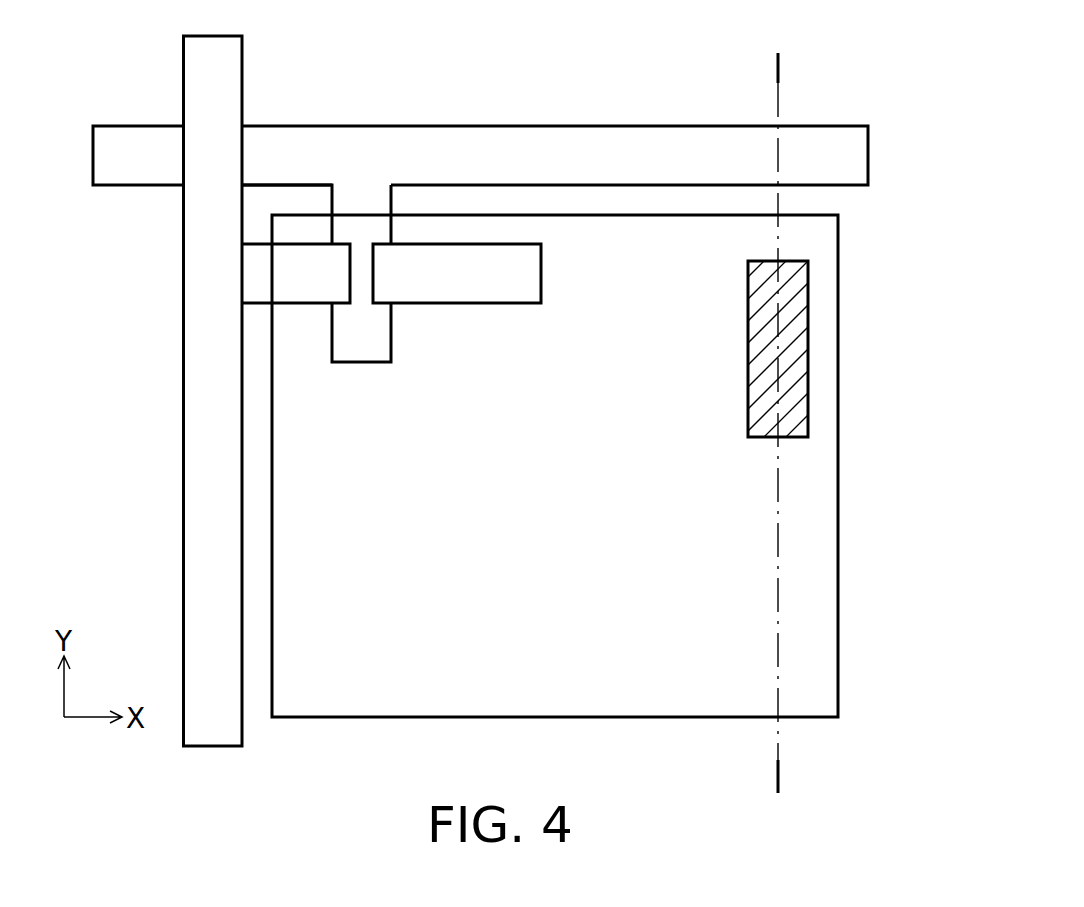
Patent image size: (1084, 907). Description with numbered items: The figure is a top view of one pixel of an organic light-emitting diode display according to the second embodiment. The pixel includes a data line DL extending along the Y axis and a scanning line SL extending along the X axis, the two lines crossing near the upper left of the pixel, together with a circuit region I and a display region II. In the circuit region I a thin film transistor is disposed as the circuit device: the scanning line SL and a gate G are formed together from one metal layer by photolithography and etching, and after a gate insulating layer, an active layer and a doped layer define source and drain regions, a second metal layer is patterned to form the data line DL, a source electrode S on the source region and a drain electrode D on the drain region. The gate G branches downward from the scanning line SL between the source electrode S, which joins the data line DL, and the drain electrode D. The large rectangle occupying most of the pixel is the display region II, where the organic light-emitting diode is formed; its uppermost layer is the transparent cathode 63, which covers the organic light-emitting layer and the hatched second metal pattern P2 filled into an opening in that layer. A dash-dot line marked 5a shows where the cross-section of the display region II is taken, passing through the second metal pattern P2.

The data line DL is at (192, 80).
The scanning line SL is at (860, 158).
The transparent cathode 63 is at (830, 570).
The display region II is at (840, 481).
The circuit region I is at (293, 333).
The source electrode S is at (304, 294).
The drain electrode D is at (465, 293).
The gate G is at (361, 353).
The second metal pattern P2 is at (798, 348).
The section line 5a- 5a is at (792, 74).